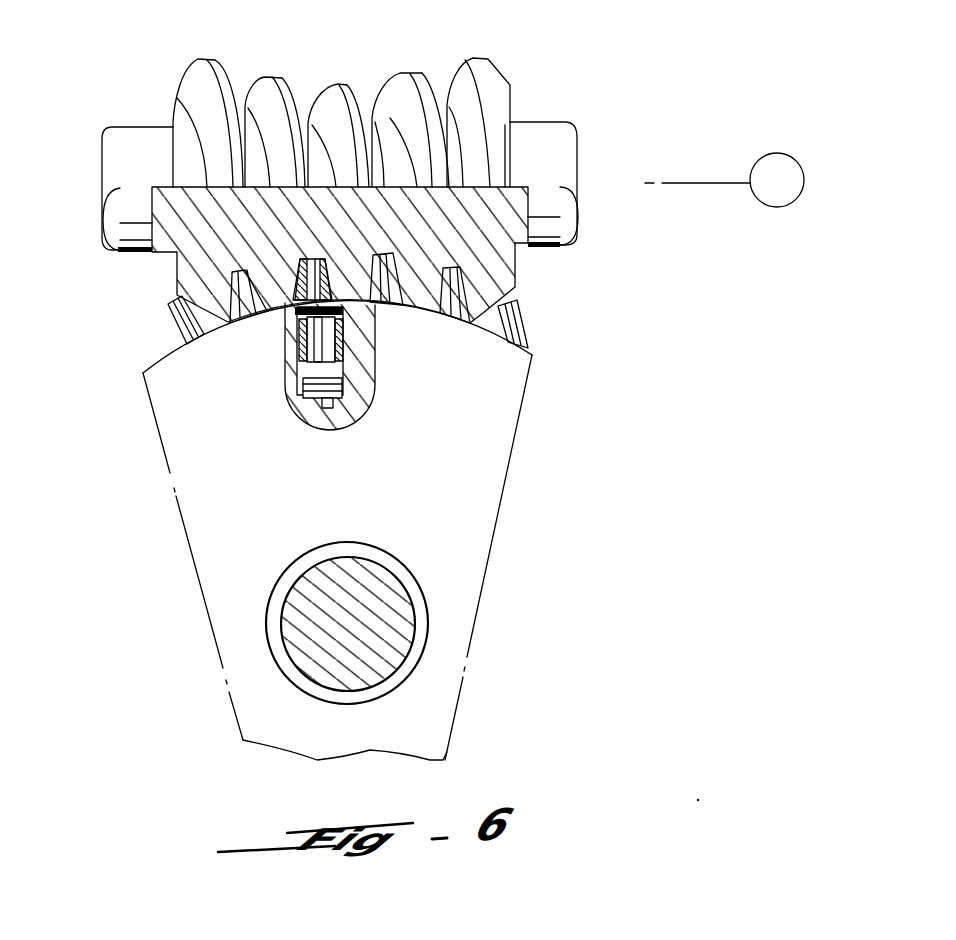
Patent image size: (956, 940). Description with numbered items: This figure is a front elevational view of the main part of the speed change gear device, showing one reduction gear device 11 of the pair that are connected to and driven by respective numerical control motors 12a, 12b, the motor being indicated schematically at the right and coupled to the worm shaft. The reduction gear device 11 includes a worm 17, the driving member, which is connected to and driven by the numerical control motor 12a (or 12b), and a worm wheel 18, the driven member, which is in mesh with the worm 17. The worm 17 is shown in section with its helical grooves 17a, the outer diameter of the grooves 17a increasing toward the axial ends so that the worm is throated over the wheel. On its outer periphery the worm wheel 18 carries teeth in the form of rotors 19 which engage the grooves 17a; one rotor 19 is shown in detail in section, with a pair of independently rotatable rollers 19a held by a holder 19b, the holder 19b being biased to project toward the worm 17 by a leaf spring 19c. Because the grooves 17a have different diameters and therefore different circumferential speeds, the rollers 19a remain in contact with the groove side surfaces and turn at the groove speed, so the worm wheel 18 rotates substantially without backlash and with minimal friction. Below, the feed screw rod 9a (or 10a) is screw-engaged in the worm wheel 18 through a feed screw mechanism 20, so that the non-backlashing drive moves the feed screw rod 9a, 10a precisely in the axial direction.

The reduction gear device 11 is at (135, 118).
The worm 17 is at (343, 173).
The grooves 17a is at (458, 77).
The worm wheel 18 is at (365, 530).
The rotors 19 is at (348, 346).
The rollers 19a is at (338, 280).
The holder 19b is at (291, 404).
The leaf spring 19c is at (340, 393).
The feed screw mechanism 20 is at (424, 596).
The feed screw rod 9a is at (434, 624).
The feed screw rod 10a is at (398, 622).
The numerical control motor 12a is at (749, 204).
The numerical control motor 12b is at (777, 207).